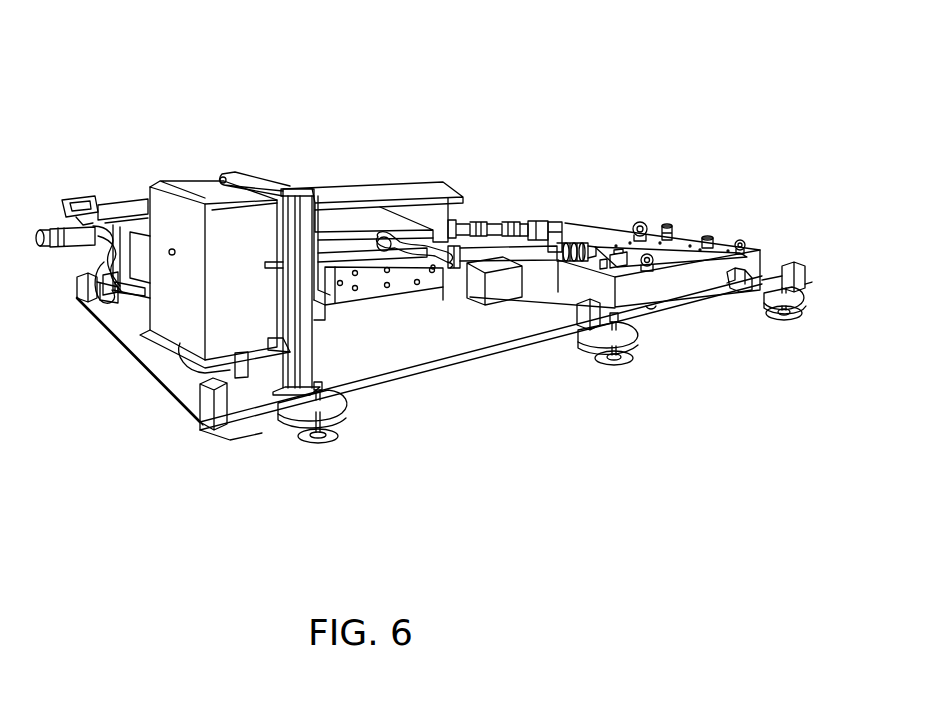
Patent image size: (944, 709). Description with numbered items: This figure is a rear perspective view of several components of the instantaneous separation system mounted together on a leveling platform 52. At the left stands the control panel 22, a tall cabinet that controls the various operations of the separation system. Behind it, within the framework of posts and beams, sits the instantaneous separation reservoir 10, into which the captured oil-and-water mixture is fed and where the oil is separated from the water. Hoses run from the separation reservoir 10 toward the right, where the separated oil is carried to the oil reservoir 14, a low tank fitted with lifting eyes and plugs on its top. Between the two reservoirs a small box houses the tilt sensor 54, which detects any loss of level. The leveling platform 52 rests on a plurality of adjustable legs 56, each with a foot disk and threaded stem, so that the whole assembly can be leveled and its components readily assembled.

The instantaneous separation reservoir 10 is at (355, 225).
The oil reservoir 14 is at (673, 258).
The control panel 22 is at (175, 220).
The leveling platform 52 is at (387, 366).
The tilt sensor 54 is at (500, 283).
The adjustable legs 56 is at (335, 441).